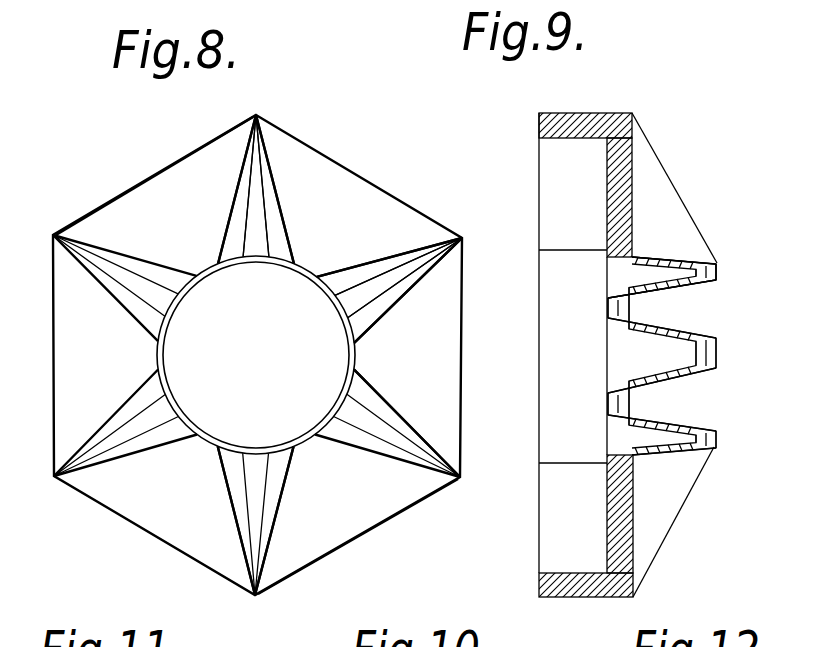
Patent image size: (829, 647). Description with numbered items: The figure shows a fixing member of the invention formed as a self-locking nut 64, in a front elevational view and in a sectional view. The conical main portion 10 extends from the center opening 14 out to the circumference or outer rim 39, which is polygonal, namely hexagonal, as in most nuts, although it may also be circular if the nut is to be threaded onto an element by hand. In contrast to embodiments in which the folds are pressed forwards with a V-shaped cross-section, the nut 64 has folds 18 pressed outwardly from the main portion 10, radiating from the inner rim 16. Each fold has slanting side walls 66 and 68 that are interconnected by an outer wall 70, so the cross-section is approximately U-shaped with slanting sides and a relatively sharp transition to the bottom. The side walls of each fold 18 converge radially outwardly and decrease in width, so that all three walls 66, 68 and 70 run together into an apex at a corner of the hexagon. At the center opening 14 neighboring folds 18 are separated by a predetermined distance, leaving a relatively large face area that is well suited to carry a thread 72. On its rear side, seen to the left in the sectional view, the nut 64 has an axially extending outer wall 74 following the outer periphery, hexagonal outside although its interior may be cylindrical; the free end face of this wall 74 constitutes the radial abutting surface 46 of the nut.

In FIG. 8, the main portion 10 is at (357, 205).
In FIG. 9, the main portion 10 is at (665, 175).
In FIG. 8, the center opening 14 is at (323, 360).
In FIG. 8, the inner rim 16 is at (192, 423).
In FIG. 8, the folds 18 is at (377, 428).
In FIG. 9, the folds 18 is at (680, 328).
In FIG. 8, the outer rim 39 is at (108, 203).
In FIG. 9, the outer rim 39 is at (633, 597).
In FIG. 9, the radial abutting surface 46 is at (539, 128).
In FIG. 8, the self-locking nut 64 is at (112, 515).
In FIG. 9, the self-locking nut 64 is at (634, 116).
In FIG. 8, the slanting side wall 66 is at (275, 210).
In FIG. 9, the slanting side wall 66 is at (665, 210).
In FIG. 8, the slanting side wall 68 is at (238, 188).
In FIG. 9, the slanting side wall 68 is at (680, 262).
In FIG. 8, the outer wall 70 is at (257, 193).
In FIG. 9, the outer wall 70 is at (718, 266).
In FIG. 8, the thread 72 is at (313, 450).
In FIG. 9, the thread 72 is at (610, 412).
In FIG. 8, the outer wall 74 is at (368, 533).
In FIG. 9, the outer wall 74 is at (575, 122).